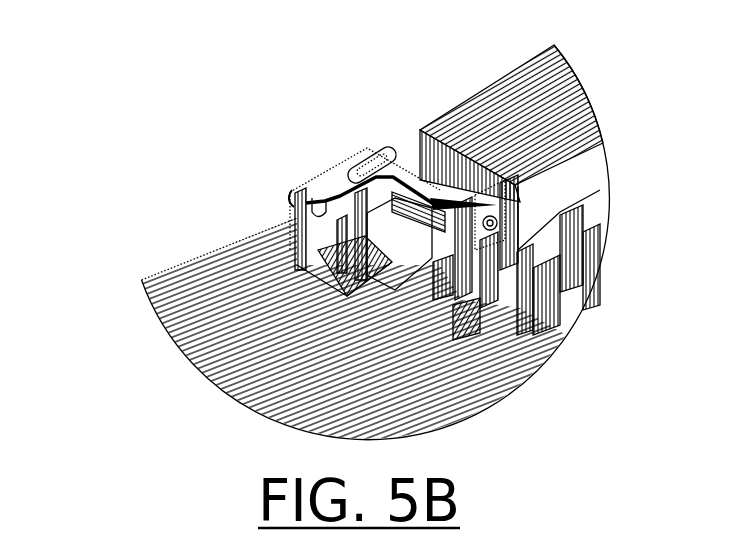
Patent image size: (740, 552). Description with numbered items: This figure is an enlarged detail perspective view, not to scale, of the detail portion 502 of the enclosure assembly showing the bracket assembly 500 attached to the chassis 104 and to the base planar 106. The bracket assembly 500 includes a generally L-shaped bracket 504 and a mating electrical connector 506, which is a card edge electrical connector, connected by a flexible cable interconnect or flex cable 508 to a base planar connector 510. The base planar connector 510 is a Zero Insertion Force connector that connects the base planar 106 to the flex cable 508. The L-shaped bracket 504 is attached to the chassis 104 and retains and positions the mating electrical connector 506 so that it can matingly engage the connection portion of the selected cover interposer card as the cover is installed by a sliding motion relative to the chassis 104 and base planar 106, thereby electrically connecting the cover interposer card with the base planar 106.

The chassis 104 is at (210, 267).
The base planar 106 is at (440, 262).
The bracket assembly 500 is at (337, 173).
The detail portion of the enclosure assembly 502 is at (178, 64).
The L-shaped bracket 504 is at (390, 150).
The mating electrical connector 506 is at (436, 250).
The flex cable 508 is at (387, 222).
The base planar connector 510 is at (430, 266).